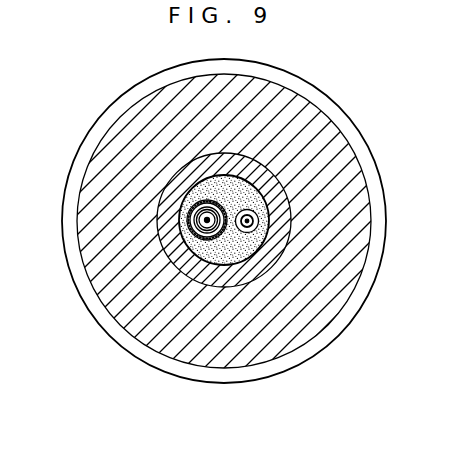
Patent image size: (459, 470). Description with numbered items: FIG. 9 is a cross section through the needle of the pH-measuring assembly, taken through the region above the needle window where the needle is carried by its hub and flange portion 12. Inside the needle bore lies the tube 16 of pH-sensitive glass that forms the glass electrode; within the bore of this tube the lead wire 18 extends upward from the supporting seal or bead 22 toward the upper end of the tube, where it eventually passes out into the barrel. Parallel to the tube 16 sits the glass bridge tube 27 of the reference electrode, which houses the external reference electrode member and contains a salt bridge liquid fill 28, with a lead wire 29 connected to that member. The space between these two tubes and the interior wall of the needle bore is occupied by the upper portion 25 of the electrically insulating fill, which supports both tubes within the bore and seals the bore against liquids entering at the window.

The hub and flange portion 12 is at (120, 106).
The tube of pH-sensitive glass 16 is at (188, 229).
The lead wire 18 is at (207, 220).
The supporting seal or bead 22 is at (199, 238).
The upper portion of insulating fill 25 is at (242, 247).
The glass bridge tube 27 is at (256, 226).
The salt bridge liquid fill 28 is at (249, 219).
The lead wire 29 is at (258, 218).